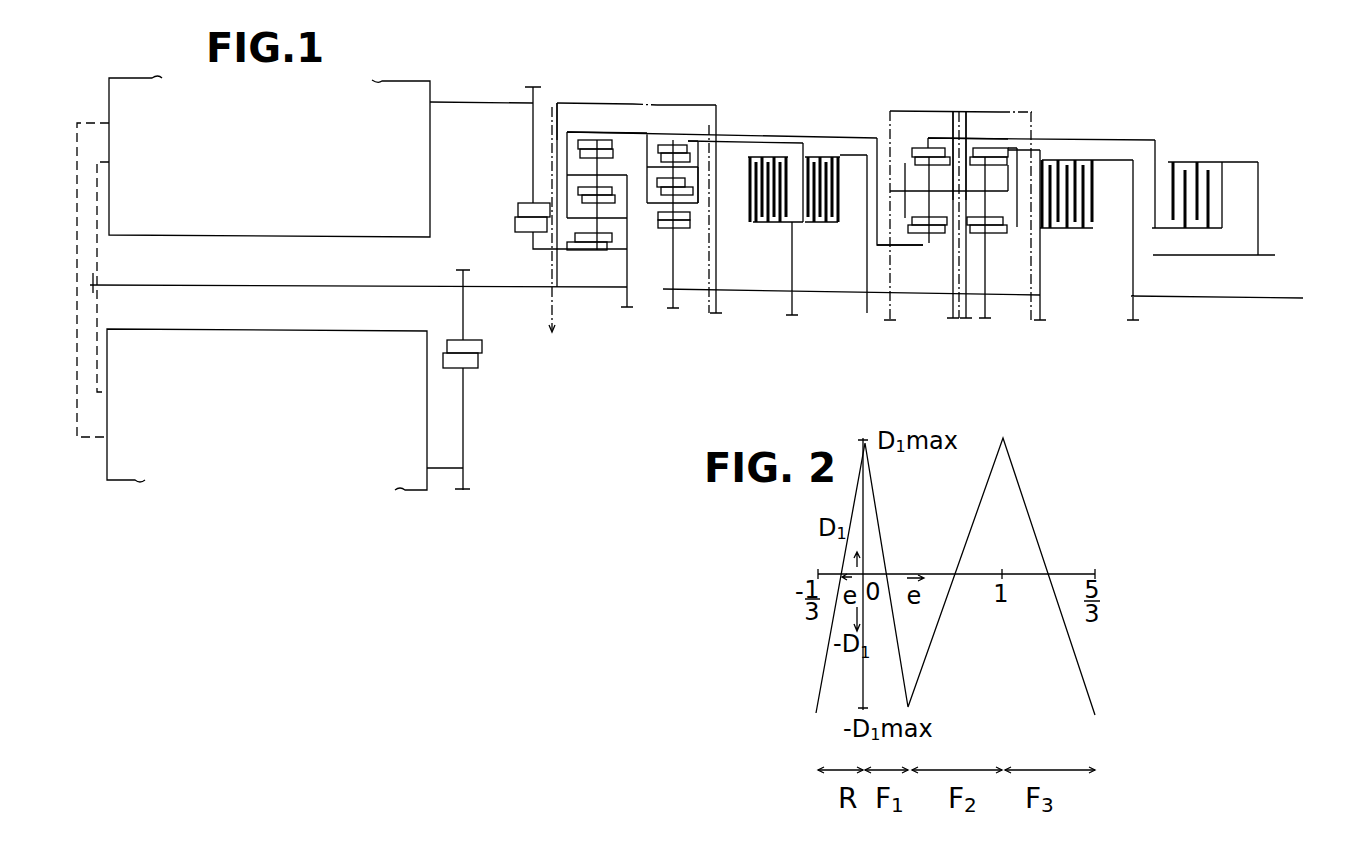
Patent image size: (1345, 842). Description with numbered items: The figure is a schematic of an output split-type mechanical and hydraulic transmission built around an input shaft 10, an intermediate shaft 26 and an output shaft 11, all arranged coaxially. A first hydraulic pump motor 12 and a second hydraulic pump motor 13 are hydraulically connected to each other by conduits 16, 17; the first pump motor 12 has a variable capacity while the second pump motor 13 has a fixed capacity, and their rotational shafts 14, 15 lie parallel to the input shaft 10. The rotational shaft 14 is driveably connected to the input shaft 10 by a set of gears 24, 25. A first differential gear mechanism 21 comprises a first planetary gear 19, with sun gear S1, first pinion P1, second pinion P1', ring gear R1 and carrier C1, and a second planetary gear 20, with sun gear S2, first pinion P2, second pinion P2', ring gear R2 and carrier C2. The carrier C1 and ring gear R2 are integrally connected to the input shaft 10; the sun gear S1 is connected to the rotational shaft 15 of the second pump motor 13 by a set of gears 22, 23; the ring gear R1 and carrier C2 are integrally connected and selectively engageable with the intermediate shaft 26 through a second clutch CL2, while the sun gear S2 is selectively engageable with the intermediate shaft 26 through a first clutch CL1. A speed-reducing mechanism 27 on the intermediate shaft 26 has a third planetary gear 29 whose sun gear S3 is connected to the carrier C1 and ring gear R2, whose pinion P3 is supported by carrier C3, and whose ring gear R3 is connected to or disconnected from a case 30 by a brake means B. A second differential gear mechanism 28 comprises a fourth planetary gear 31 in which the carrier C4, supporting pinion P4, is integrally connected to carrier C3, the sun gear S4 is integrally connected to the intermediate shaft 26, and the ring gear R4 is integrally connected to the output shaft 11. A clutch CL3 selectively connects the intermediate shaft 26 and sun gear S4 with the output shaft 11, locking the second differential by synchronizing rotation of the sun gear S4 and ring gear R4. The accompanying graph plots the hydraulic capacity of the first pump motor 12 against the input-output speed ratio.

The input shaft 10 is at (240, 285).
The output shaft 11 is at (1238, 298).
The first hydraulic pump motor 12 is at (238, 329).
The second hydraulic pump motor 13 is at (430, 172).
The rotational shaft 14 is at (440, 470).
The rotational shaft 15 is at (474, 102).
The conduit 16 is at (93, 122).
The conduit 17 is at (97, 268).
The first planetary gear 19 is at (678, 214).
The second planetary gear 20 is at (725, 211).
The first differential gear mechanism 21 is at (650, 104).
The gear 22 is at (533, 242).
The gear 23 is at (533, 128).
The gear 24 is at (463, 322).
The gear 25 is at (463, 441).
The intermediate shaft 26 is at (827, 292).
The speed-reducing mechanism 27 is at (888, 102).
The second differential gear mechanism 28 is at (1040, 103).
The third planetary gear 29 is at (1016, 221).
The case 30 is at (1262, 252).
The fourth planetary gear 31 is at (1021, 215).
The brake means B is at (1198, 180).
The carrier C1 is at (570, 130).
The carrier C2 is at (702, 178).
The carrier C3 is at (950, 165).
The carrier C4 is at (1012, 163).
The first clutch CL1 is at (772, 157).
The second clutch CL2 is at (818, 157).
The clutch CL3 is at (1072, 222).
The ring gear R1 is at (627, 142).
The ring gear R2 is at (688, 153).
The ring gear R3 is at (920, 145).
The ring gear R4 is at (1025, 148).
The first pinion P1 is at (554, 182).
The second pinion P1' is at (546, 152).
The first pinion P2 is at (709, 229).
The second pinion P2' is at (694, 112).
The pinion P3 is at (932, 203).
The pinion P4 is at (986, 205).
The sun gear S1 is at (585, 250).
The sun gear S2 is at (673, 240).
The sun gear S3 is at (910, 247).
The sun gear S4 is at (985, 280).